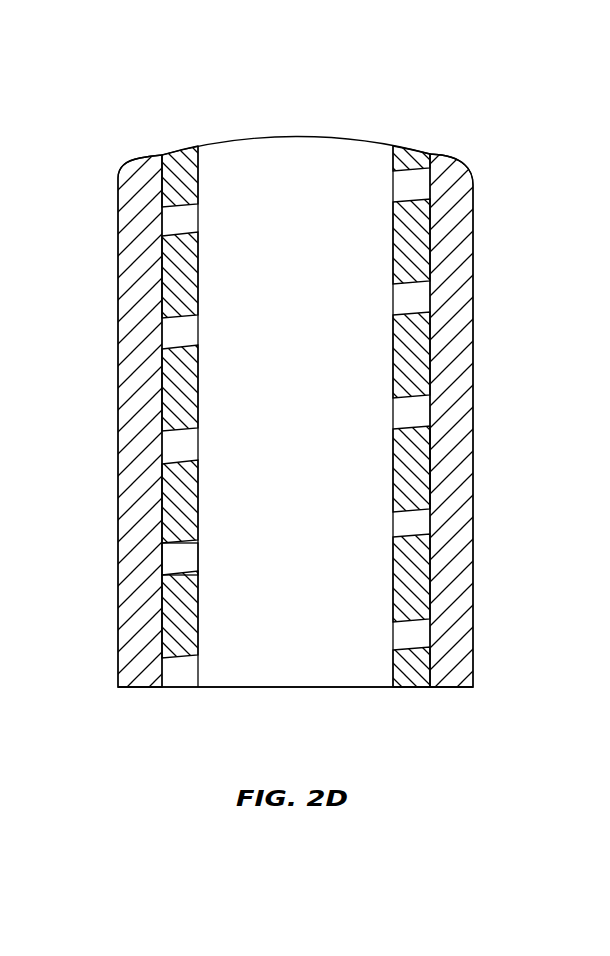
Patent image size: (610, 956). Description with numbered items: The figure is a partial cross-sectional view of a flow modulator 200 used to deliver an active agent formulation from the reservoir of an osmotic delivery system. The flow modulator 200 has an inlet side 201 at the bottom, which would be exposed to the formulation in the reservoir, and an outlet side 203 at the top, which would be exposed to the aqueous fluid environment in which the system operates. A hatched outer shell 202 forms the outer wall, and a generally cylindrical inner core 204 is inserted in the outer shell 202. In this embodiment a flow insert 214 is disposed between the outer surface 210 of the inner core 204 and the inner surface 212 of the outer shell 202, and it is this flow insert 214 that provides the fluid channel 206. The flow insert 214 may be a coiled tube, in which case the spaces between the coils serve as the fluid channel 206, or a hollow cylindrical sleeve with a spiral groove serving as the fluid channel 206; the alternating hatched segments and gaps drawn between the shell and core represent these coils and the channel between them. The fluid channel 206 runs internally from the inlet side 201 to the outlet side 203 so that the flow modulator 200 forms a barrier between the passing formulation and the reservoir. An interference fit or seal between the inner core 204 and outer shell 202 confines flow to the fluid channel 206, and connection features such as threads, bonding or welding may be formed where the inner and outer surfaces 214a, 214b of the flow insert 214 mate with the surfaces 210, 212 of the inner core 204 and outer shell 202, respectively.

The flow modulator 200 is at (314, 112).
The inlet side 201 is at (353, 700).
The outer shell 202 is at (118, 343).
The outlet side 203 is at (392, 131).
The inner core 204 is at (365, 244).
The fluid channel 206 is at (177, 556).
The outer surface of the inner core 210 is at (433, 352).
The inner surface of the outer shell 212 is at (163, 456).
The flow insert 214 is at (173, 136).
The inner surface of the flow insert 214a is at (394, 471).
The outer surface of the flow insert 214b is at (433, 485).